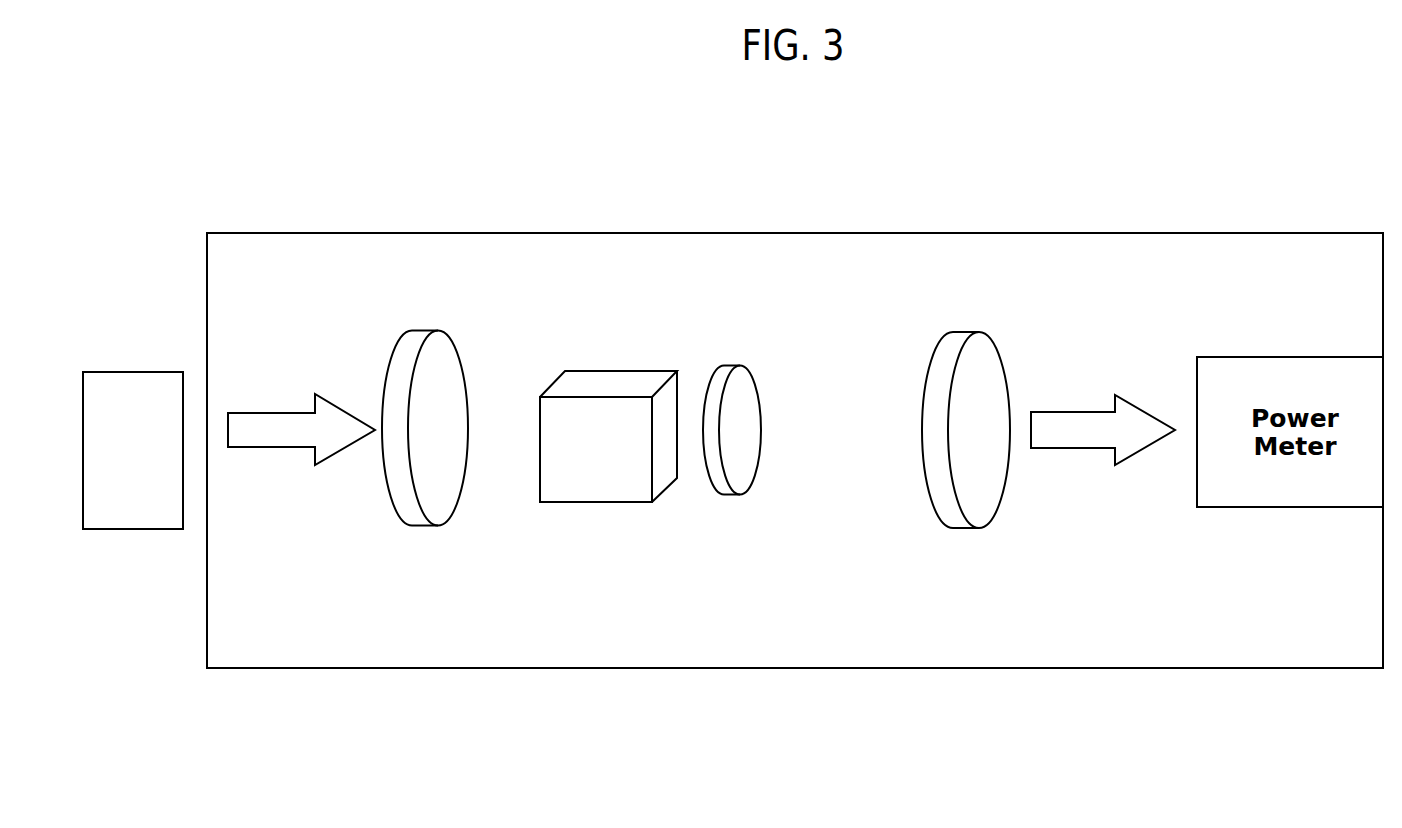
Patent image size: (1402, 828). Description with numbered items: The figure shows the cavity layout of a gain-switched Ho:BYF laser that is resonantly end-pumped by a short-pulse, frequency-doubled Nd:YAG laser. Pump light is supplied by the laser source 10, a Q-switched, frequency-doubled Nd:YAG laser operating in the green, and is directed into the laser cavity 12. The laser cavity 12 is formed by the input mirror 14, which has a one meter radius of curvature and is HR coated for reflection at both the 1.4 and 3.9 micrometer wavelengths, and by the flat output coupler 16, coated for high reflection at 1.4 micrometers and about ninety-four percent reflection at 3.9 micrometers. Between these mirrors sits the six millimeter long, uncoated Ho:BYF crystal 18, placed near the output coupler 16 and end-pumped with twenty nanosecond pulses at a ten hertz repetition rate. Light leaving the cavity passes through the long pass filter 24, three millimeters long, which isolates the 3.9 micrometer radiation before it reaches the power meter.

The laser source 10 is at (134, 506).
The laser cavity 12 is at (795, 502).
The input mirror 14 is at (442, 482).
The output coupler 16 is at (796, 397).
The Ho:BYF crystal 18 is at (621, 495).
The long pass filter 24 is at (1003, 493).